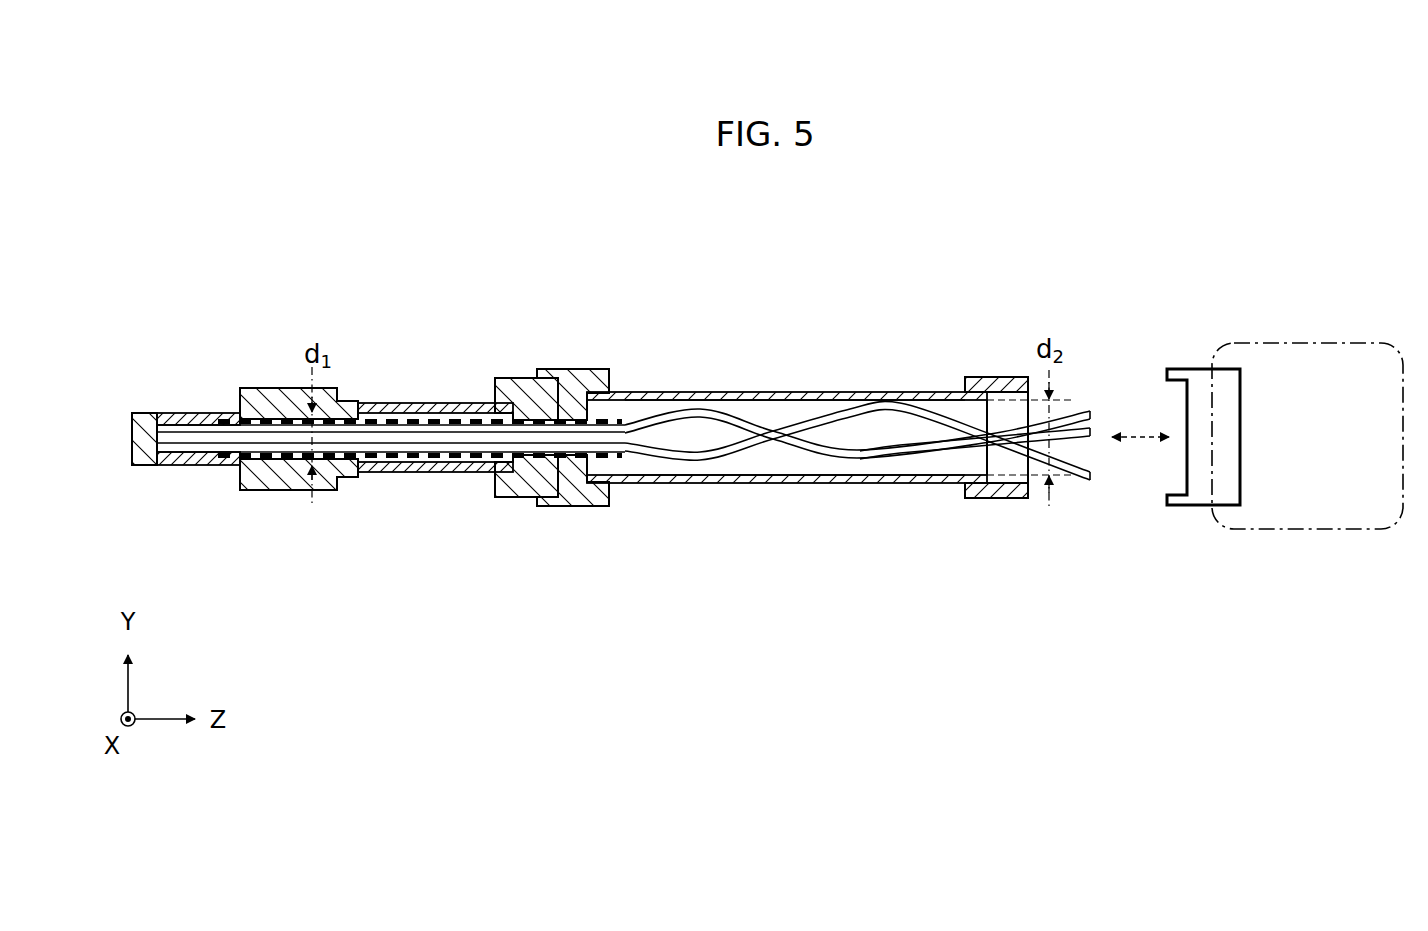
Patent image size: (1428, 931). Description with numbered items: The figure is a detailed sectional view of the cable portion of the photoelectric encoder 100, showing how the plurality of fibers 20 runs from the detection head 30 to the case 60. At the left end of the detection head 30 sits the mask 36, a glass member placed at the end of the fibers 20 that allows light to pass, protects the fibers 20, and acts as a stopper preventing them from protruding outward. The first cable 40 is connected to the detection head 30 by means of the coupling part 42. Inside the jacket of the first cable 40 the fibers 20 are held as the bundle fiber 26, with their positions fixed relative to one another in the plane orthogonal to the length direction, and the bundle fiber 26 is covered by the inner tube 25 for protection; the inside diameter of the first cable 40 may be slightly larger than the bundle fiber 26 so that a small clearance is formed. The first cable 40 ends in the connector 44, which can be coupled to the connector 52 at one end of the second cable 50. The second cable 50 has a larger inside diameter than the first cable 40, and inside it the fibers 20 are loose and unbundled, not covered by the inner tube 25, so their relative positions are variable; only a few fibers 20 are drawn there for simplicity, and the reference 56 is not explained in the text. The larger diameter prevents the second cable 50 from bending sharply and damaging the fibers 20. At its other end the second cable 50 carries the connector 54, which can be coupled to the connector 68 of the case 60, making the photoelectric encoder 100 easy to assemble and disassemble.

The fibers 20 is at (772, 415).
The inner tube 25 is at (382, 474).
The bundle fiber 26 is at (468, 430).
The detection head 30 is at (187, 465).
The mask 36 is at (140, 467).
The first cable 40 is at (440, 474).
The coupling part 42 is at (276, 390).
The connector 44 is at (515, 380).
The second cable 50 is at (875, 483).
The connector 52 is at (585, 370).
The connector 54 is at (997, 377).
The sleeve inner wall 56 is at (786, 478).
The case 60 is at (1300, 531).
The connector 68 is at (1197, 496).
The photoelectric encoder 100 is at (1224, 246).